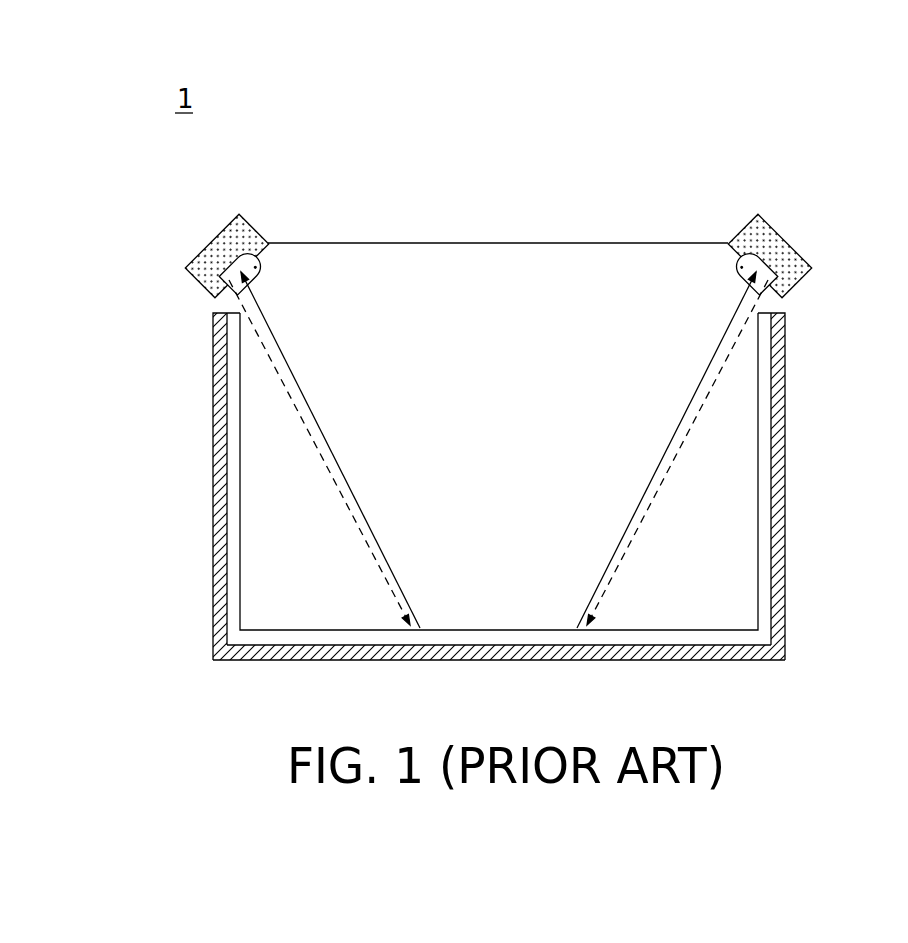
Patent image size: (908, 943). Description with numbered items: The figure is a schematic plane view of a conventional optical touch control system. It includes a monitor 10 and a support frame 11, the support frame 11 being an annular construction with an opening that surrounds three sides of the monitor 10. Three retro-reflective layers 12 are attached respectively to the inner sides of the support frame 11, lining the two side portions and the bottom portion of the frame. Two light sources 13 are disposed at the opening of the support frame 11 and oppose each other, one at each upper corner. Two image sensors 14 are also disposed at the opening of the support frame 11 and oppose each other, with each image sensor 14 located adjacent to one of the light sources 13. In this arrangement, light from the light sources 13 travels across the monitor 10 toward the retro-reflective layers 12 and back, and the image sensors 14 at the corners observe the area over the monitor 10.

The monitor 10 is at (740, 400).
The support frame 11 is at (327, 648).
The retro-reflective layer 12 is at (228, 513).
The light source 13 is at (264, 268).
The image sensor 14 is at (256, 228).